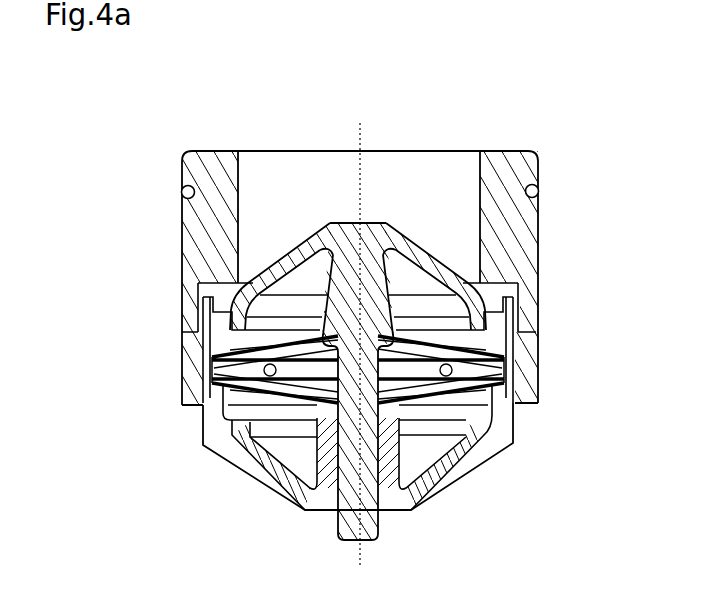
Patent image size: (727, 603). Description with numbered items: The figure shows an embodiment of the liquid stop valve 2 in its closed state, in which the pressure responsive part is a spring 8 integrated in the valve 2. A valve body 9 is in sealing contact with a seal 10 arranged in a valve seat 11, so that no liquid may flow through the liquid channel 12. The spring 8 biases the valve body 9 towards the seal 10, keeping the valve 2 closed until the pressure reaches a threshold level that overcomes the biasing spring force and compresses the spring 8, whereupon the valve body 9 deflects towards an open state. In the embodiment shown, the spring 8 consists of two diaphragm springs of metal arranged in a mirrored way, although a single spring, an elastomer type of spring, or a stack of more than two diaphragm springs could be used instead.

The liquid stop valve 2 is at (150, 251).
The spring 8 is at (483, 412).
The valve body 9 is at (377, 250).
The seal 10 is at (498, 292).
The valve seat 11 is at (244, 290).
The liquid channel 12 is at (289, 195).